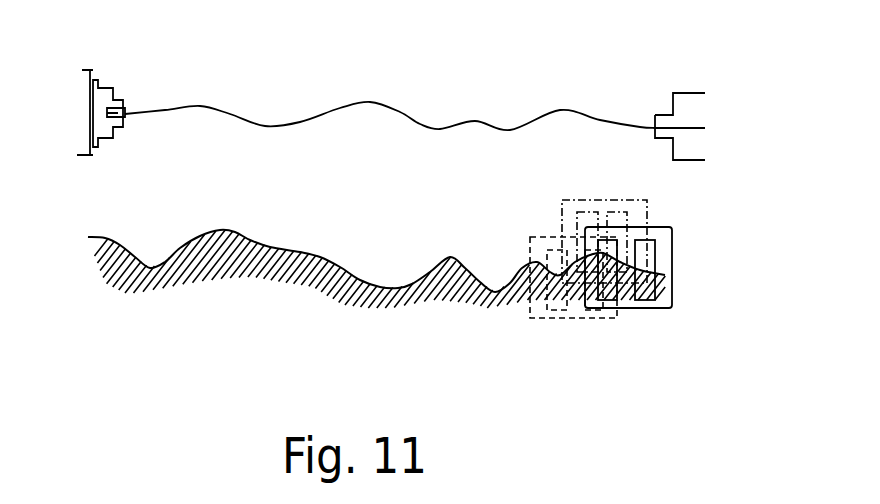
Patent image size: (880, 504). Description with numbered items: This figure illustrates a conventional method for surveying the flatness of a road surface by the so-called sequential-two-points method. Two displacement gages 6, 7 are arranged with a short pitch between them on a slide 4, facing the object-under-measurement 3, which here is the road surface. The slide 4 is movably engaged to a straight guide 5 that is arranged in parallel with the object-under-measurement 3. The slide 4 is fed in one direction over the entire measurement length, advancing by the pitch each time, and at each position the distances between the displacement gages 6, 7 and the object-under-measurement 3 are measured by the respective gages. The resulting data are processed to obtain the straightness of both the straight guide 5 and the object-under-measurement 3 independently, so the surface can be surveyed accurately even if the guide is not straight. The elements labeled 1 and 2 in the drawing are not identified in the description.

The first connector 1 is at (82, 70).
The second connector 2 is at (688, 98).
The object-under-measurement 3 is at (167, 108).
The slide 4 is at (530, 237).
The straight guide 5 is at (300, 250).
The displacement gage 6 is at (640, 307).
The displacement gage 7 is at (613, 307).